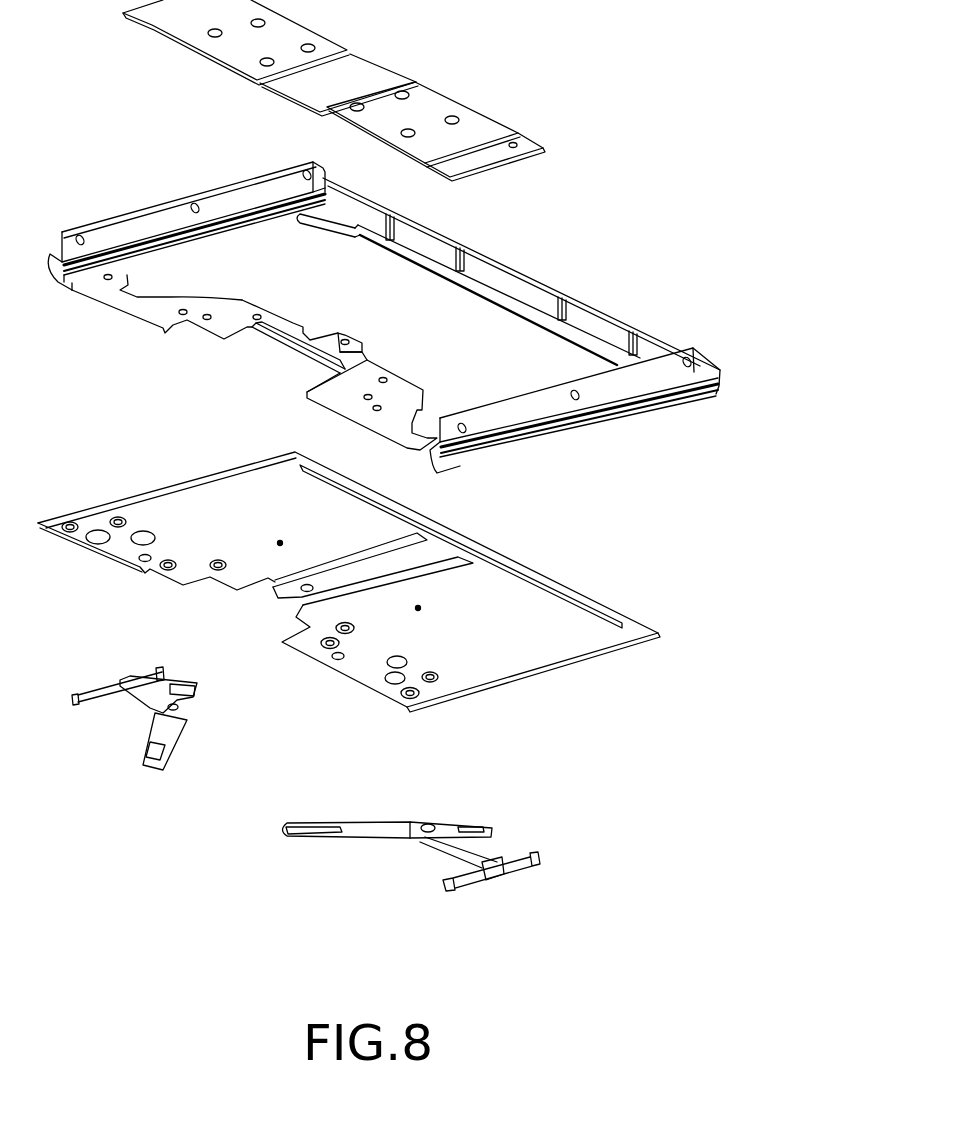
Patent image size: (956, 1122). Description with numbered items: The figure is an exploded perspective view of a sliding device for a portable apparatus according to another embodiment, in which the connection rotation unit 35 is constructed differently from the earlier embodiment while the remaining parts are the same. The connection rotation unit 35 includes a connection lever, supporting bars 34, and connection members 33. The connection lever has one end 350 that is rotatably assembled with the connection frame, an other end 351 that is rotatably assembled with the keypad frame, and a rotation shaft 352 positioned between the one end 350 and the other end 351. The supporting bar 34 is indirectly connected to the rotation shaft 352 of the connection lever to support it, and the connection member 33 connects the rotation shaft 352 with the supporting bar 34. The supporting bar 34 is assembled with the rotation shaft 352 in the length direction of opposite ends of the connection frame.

The connection member 33 is at (447, 852).
The supporting bar 34 is at (538, 858).
The connection rotation unit 35 is at (368, 789).
The one end of the connection lever 350 is at (484, 826).
The other end of the connection lever 351 is at (280, 828).
The rotation shaft 352 is at (434, 787).